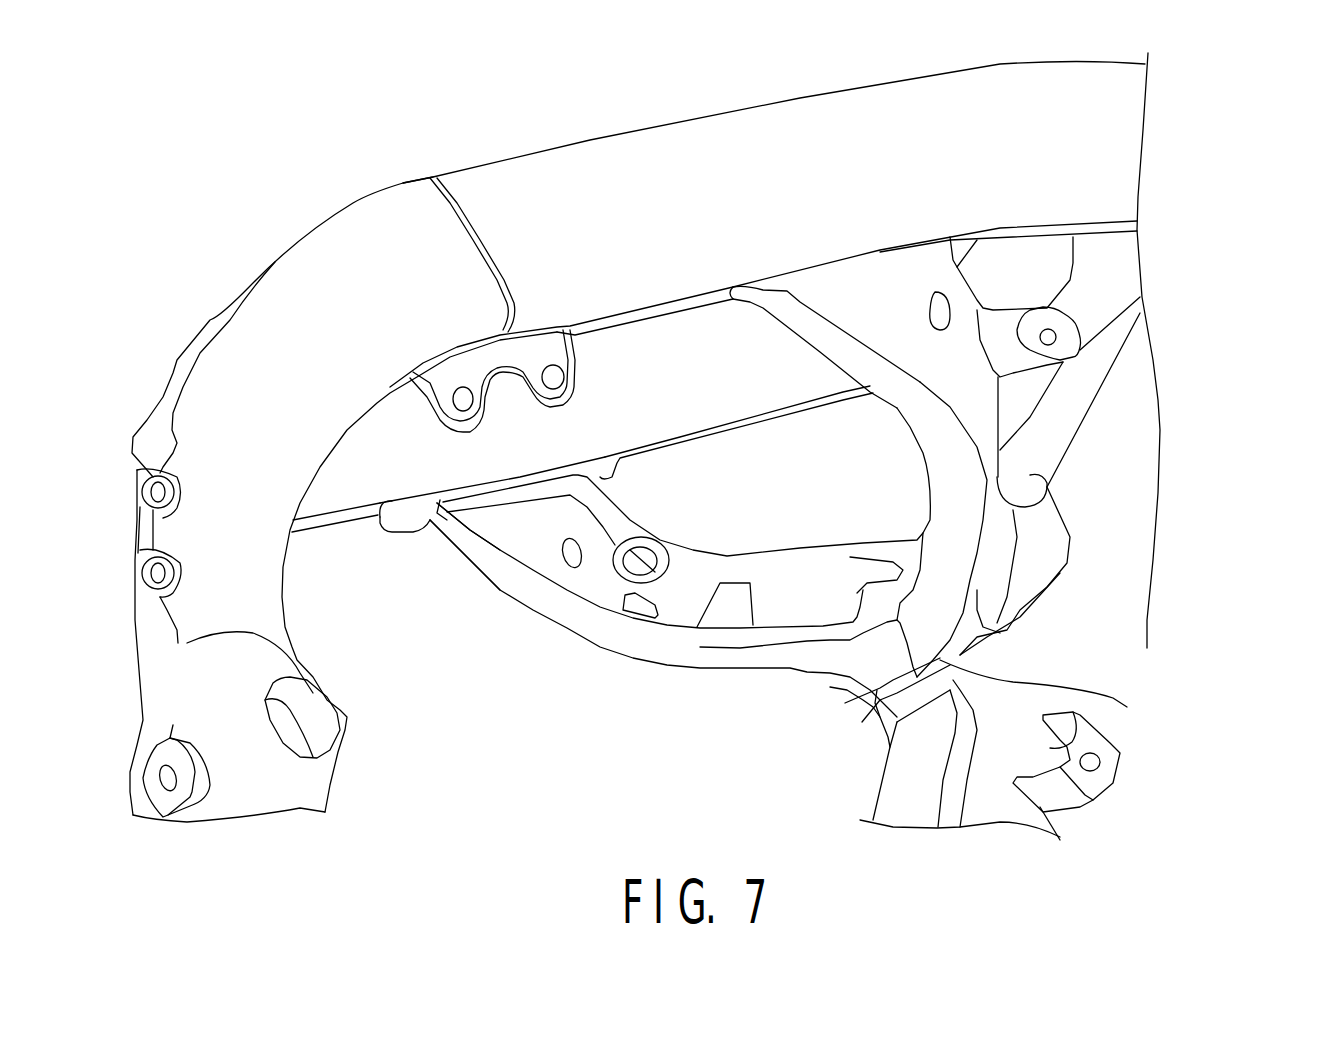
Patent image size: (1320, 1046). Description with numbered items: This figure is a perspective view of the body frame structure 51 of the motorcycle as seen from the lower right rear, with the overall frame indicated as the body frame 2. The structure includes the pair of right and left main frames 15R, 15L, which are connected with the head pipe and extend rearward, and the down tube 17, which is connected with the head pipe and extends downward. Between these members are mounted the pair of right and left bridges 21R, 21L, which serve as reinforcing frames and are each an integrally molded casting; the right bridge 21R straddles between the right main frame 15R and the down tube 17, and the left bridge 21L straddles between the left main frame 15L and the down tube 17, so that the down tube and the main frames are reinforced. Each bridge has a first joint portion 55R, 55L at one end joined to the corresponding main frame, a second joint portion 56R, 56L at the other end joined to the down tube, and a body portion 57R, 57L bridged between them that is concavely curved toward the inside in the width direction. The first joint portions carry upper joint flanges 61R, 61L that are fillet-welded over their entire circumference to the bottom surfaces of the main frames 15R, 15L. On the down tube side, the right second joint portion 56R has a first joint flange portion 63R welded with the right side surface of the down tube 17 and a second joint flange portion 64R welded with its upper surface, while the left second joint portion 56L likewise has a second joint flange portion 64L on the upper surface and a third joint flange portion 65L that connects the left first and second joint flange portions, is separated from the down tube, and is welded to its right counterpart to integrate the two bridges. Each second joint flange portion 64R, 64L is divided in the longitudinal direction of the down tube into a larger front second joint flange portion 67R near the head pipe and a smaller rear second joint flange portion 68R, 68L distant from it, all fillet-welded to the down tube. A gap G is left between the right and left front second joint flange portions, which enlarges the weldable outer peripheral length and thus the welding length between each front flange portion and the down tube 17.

The motorcycle body frame 2 is at (864, 84).
The right main frame 15R is at (808, 94).
The left main frame 15L is at (330, 520).
The down tube 17 is at (1113, 660).
The right bridge 21R is at (895, 403).
The left bridge 21L is at (651, 587).
The body frame structure 51 is at (515, 682).
The first joint portion 55R is at (770, 305).
The first joint portion 55L is at (418, 528).
The second joint portion 56R is at (940, 623).
The second joint portion 56L is at (870, 690).
The body portion 57R is at (900, 402).
The body portion 57L is at (607, 653).
The upper joint flange 61R is at (724, 300).
The upper joint flange 61L is at (383, 520).
The first joint flange portion 63R is at (1073, 527).
The second joint flange portion 64R is at (1135, 573).
The second joint flange portion 64L is at (878, 753).
The third joint flange portion 65L is at (847, 675).
The front second joint flange portion 67R is at (1040, 480).
The rear second joint flange portion 68R is at (1147, 650).
The rear second joint flange portion 68L is at (877, 710).
The gap G is at (1012, 450).